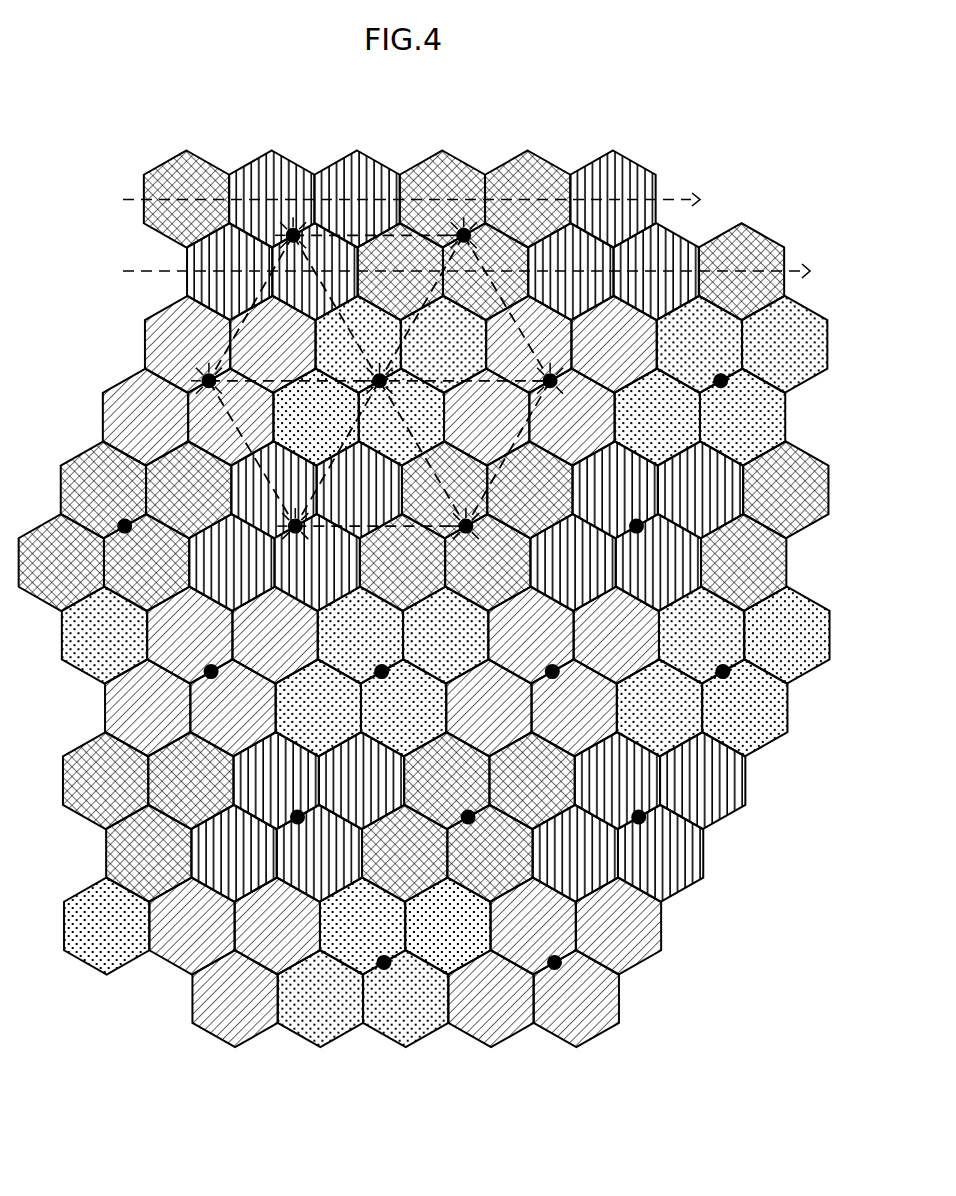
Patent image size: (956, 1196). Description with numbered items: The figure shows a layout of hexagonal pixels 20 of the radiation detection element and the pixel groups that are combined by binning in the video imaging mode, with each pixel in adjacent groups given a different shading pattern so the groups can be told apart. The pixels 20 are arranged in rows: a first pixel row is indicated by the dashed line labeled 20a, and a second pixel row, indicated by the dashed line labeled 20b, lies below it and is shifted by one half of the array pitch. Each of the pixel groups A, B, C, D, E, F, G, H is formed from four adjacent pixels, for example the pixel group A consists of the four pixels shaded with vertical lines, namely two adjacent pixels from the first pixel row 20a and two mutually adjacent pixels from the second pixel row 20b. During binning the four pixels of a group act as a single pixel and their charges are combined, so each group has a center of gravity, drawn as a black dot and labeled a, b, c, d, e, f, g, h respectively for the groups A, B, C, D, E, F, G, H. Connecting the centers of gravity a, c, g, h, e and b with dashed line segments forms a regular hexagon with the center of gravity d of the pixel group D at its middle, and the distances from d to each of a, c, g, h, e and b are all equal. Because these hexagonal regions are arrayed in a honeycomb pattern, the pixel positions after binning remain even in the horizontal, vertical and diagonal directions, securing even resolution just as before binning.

The pixel 20 is at (244, 157).
The first pixel row 20a is at (379, 200).
The second pixel row 20b is at (434, 272).
The pixel group A is at (273, 167).
The pixel group B is at (460, 167).
The pixel group C is at (148, 334).
The pixel group D is at (463, 343).
The pixel group E is at (603, 413).
The pixel group F is at (78, 447).
The pixel group G is at (205, 575).
The pixel group H is at (567, 598).
The center of gravity a is at (283, 229).
The center of gravity b is at (478, 230).
The center of gravity c is at (202, 370).
The center of gravity d is at (377, 361).
The center of gravity e is at (562, 390).
The center of gravity f is at (115, 511).
The center of gravity g is at (293, 539).
The center of gravity h is at (473, 536).